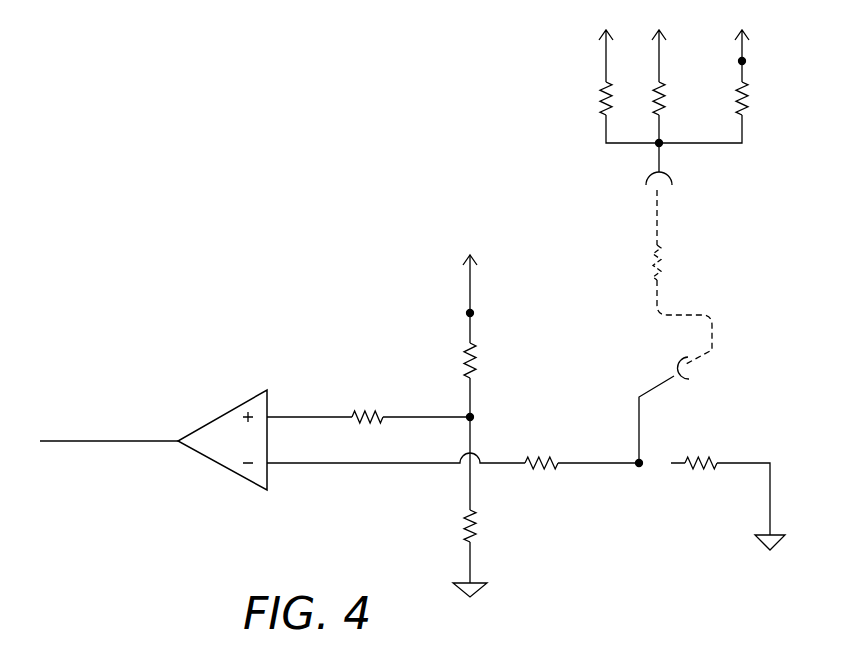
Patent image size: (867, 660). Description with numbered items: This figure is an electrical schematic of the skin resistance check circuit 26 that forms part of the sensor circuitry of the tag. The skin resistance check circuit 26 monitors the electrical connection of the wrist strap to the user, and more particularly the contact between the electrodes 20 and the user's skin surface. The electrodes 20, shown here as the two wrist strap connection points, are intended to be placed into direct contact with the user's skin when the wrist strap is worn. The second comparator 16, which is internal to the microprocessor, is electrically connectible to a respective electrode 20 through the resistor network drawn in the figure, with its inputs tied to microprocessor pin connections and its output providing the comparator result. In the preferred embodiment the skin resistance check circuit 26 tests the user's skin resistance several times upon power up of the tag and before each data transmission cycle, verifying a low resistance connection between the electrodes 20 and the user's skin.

The skin resistance check circuit 26 is at (270, 172).
The second comparator 16 is at (226, 390).
The electrode 20 is at (681, 200).